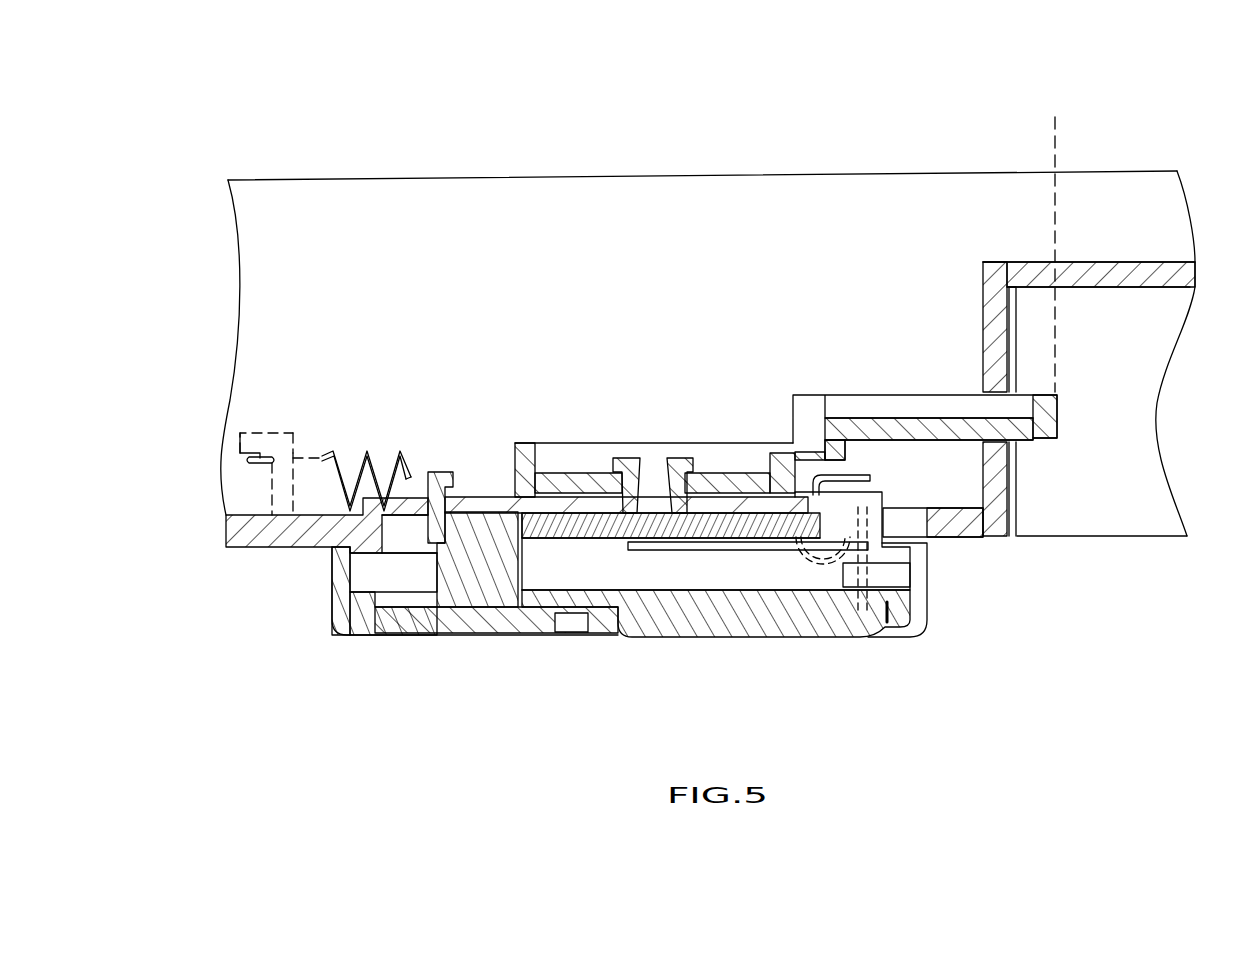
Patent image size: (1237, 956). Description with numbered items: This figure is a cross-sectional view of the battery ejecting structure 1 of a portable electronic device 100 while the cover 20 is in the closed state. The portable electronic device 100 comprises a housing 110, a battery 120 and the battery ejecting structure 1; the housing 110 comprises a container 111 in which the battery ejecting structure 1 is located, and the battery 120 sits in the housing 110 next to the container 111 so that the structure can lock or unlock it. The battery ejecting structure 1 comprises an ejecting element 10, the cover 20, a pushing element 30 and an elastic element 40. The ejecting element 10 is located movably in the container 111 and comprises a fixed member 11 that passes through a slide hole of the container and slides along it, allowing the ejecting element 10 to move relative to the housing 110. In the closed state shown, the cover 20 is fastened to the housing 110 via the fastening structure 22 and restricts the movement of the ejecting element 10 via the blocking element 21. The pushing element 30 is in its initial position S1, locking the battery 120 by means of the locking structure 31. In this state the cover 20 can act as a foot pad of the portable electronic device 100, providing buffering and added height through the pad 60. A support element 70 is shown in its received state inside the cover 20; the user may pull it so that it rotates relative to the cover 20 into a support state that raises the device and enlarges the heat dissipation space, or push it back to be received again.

The battery ejecting structure 1 is at (342, 661).
The ejecting element 10 is at (567, 525).
The fixed member 11 is at (673, 470).
The cover 20 is at (905, 602).
The blocking element 21 is at (502, 520).
The fastening structure 22 is at (448, 480).
The pushing element 30 is at (525, 452).
The locking structure 31 is at (940, 430).
The elastic element 40 is at (367, 470).
The pad 60 is at (757, 628).
The support element 70 is at (478, 640).
The portable electronic device 100 is at (1153, 155).
The housing 110 is at (248, 524).
The container 111 is at (412, 538).
The battery 120 is at (1138, 428).
The initial position S1 is at (1056, 238).